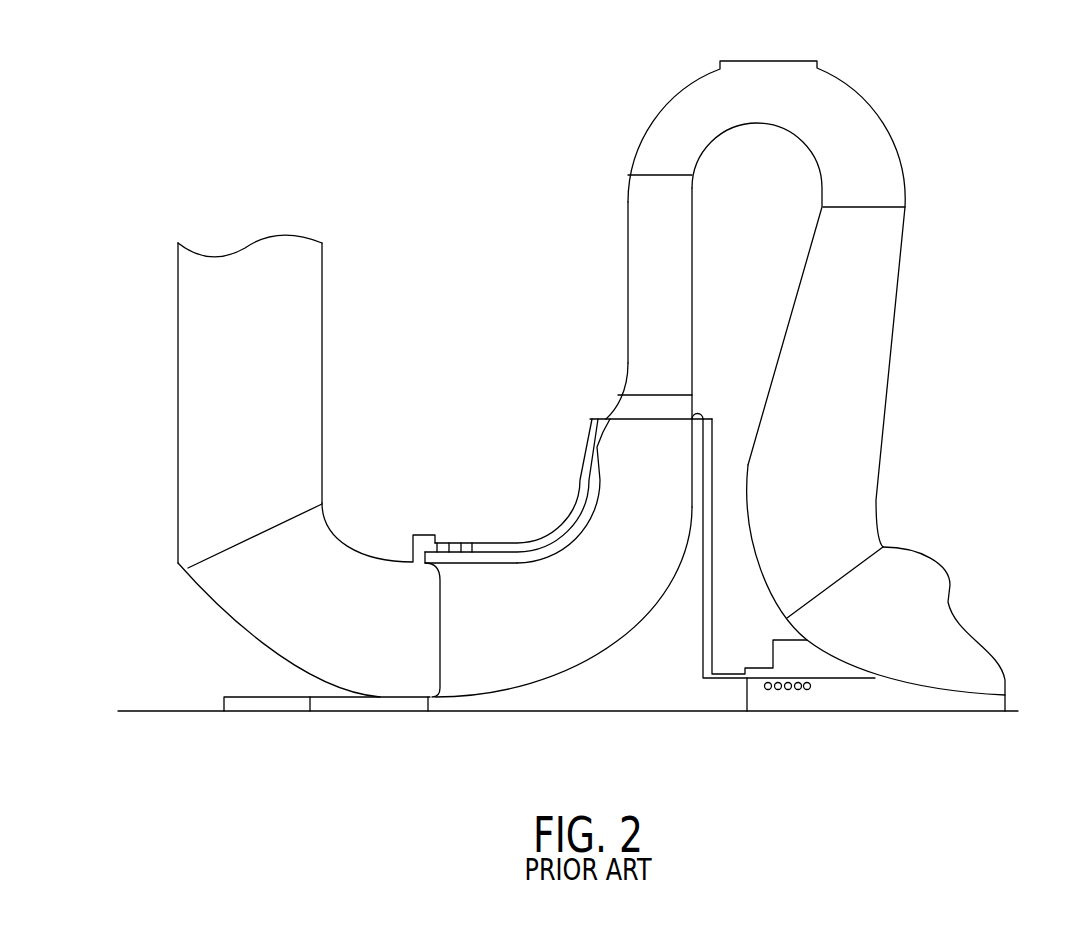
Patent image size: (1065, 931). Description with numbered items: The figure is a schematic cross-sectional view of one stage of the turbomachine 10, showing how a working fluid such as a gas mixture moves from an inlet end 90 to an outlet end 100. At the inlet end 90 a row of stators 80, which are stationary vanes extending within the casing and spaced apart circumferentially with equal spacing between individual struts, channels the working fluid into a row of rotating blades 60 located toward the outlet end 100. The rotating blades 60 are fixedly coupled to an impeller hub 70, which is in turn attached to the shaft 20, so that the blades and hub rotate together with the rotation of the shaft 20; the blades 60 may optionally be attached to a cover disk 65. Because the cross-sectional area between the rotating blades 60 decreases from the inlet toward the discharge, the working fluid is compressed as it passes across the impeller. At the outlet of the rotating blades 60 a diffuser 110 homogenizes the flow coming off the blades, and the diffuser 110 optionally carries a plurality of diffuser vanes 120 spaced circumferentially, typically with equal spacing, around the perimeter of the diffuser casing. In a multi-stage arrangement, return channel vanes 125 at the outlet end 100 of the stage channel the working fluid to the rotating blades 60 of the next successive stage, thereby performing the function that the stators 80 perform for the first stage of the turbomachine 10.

The turbomachine 10 is at (585, 390).
The shaft 20 is at (838, 697).
The rotating blades 60 is at (550, 650).
The cover disk 65 is at (482, 557).
The impeller hub 70 is at (697, 697).
The stators 80 is at (300, 395).
The inlet end 90 is at (306, 420).
The outlet end 100 is at (990, 612).
The diffuser 110 is at (632, 410).
The diffuser vanes 120 is at (635, 280).
The return channel vanes 125 is at (872, 395).